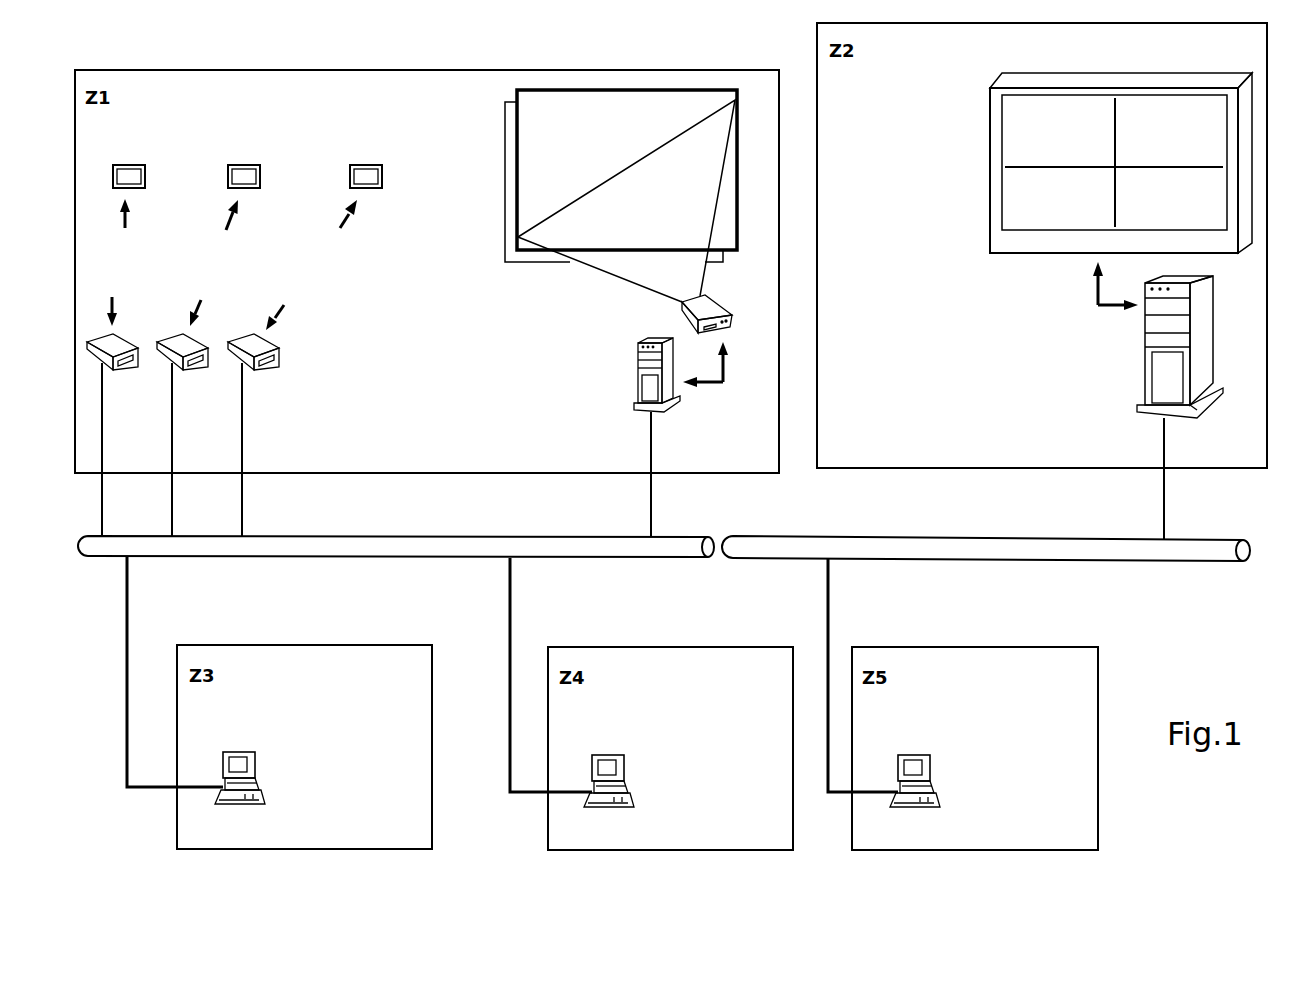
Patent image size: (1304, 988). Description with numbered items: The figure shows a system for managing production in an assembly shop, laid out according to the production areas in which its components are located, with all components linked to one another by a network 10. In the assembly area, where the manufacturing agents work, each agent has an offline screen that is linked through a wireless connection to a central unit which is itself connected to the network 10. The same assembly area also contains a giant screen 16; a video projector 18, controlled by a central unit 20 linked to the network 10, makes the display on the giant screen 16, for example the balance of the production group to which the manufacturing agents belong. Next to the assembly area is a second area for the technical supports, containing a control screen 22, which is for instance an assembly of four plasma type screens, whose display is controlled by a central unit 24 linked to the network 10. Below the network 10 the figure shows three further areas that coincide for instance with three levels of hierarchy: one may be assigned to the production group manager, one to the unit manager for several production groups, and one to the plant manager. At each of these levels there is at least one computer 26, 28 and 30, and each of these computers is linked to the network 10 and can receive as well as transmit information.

The network 10 is at (680, 559).
The giant screen 16 is at (557, 135).
The video projector 18 is at (712, 298).
The central unit 20 is at (637, 370).
The control screen 22 is at (1005, 200).
The central unit 24 is at (1145, 388).
The computer 26 is at (257, 756).
The computer 28 is at (626, 759).
The computer 30 is at (932, 759).